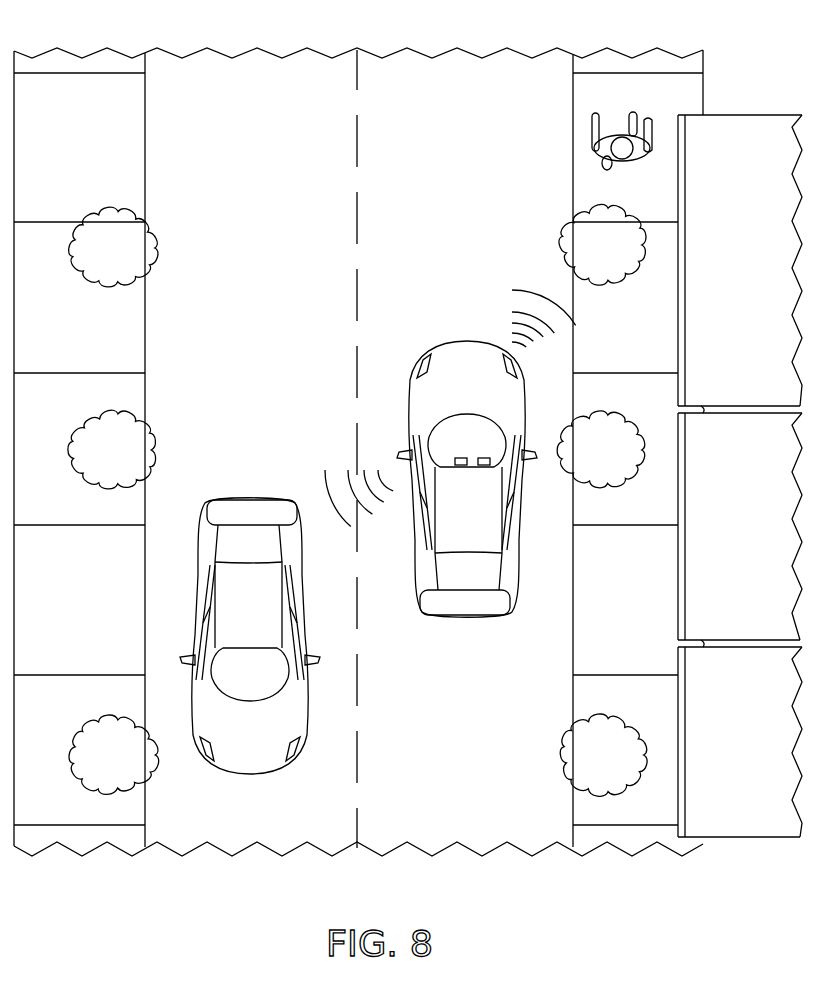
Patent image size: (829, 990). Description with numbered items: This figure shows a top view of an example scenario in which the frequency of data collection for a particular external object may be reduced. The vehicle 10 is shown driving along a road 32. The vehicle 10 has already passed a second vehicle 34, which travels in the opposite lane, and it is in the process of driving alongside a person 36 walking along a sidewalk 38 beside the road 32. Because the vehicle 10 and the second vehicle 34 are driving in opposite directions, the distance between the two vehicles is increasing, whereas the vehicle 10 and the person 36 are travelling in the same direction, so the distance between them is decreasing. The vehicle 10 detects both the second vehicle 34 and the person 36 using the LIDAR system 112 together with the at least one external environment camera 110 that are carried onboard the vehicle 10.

The vehicle 10 is at (450, 453).
The road 32 is at (515, 62).
The second vehicle 34 is at (248, 773).
The person 36 is at (593, 148).
The sidewalk 38 is at (695, 88).
The external environment camera 110 is at (490, 458).
The LIDAR system 112 is at (456, 458).